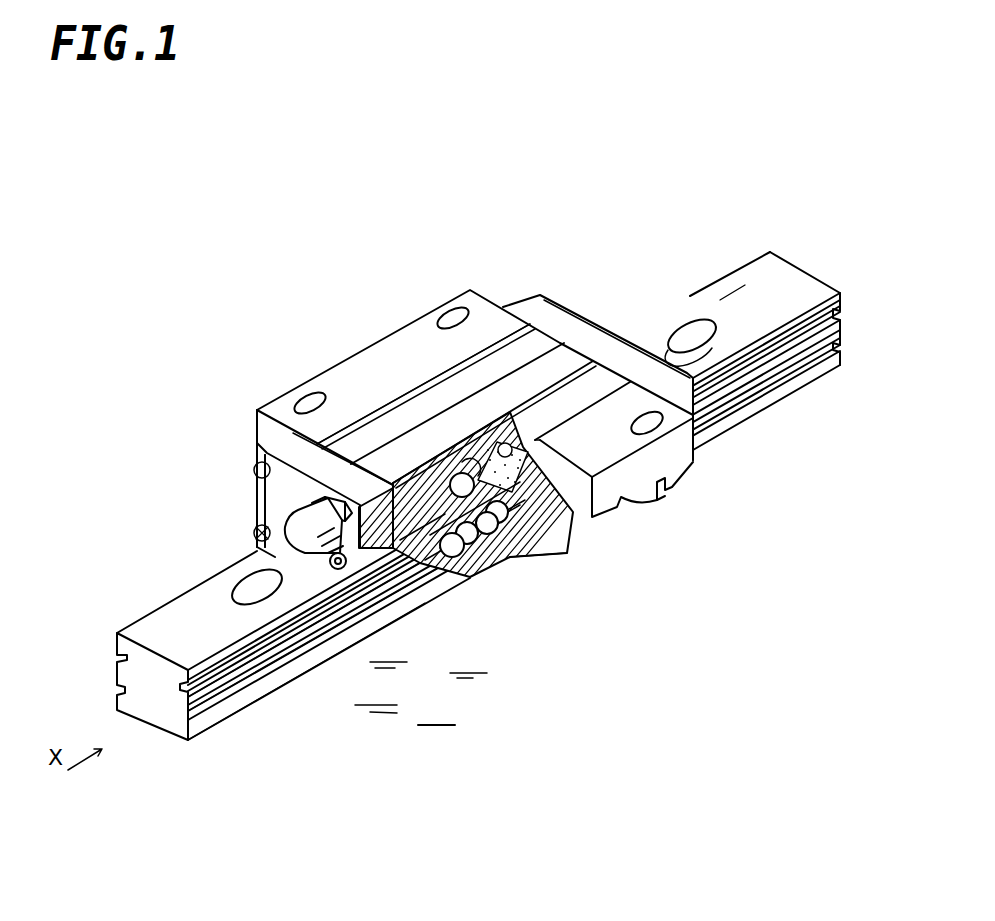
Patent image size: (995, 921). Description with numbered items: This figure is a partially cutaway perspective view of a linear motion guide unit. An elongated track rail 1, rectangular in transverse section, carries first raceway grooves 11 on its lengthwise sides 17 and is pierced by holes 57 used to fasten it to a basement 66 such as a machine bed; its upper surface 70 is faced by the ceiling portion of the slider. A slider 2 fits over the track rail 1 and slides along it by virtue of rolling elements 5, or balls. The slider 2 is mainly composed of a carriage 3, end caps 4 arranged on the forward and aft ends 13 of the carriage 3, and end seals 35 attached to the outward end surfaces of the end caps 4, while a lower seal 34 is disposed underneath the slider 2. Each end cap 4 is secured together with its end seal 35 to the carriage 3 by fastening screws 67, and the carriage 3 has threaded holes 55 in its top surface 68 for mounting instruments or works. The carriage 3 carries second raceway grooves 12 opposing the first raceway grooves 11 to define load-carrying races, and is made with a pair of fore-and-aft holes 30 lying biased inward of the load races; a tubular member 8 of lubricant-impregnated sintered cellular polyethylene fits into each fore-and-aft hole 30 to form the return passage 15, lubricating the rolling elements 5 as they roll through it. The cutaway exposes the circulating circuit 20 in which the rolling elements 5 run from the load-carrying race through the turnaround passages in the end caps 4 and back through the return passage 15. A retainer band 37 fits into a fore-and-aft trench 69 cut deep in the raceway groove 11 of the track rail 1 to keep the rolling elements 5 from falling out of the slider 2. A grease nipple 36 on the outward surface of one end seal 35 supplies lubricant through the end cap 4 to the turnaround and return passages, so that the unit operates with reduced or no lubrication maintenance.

The track rail 1 is at (178, 613).
The slider 2 is at (507, 306).
The carriage 3 is at (400, 350).
The end cap 4 is at (283, 453).
The rolling element 5 is at (457, 487).
The tubular member 8 is at (537, 442).
The first raceway groove 11 is at (277, 645).
The second raceway groove 12 is at (505, 555).
The forward and aft end 13 is at (285, 455).
The return passage 15 is at (468, 470).
The lengthwise side 17 is at (222, 700).
The circulating circuit 20 is at (483, 556).
The fore-and-aft hole 30 is at (500, 432).
The lower seal 34 is at (535, 558).
The end seal 35 is at (275, 503).
The grease nipple 36 is at (338, 570).
The retainer band 37 is at (425, 580).
The threaded hole 55 is at (455, 312).
The hole 57 is at (253, 582).
The basement 66 is at (421, 694).
The fastening screw 67 is at (262, 470).
The top surface 68 is at (500, 358).
The fore-and-aft trench 69 is at (232, 660).
The upper surface 70 is at (732, 302).